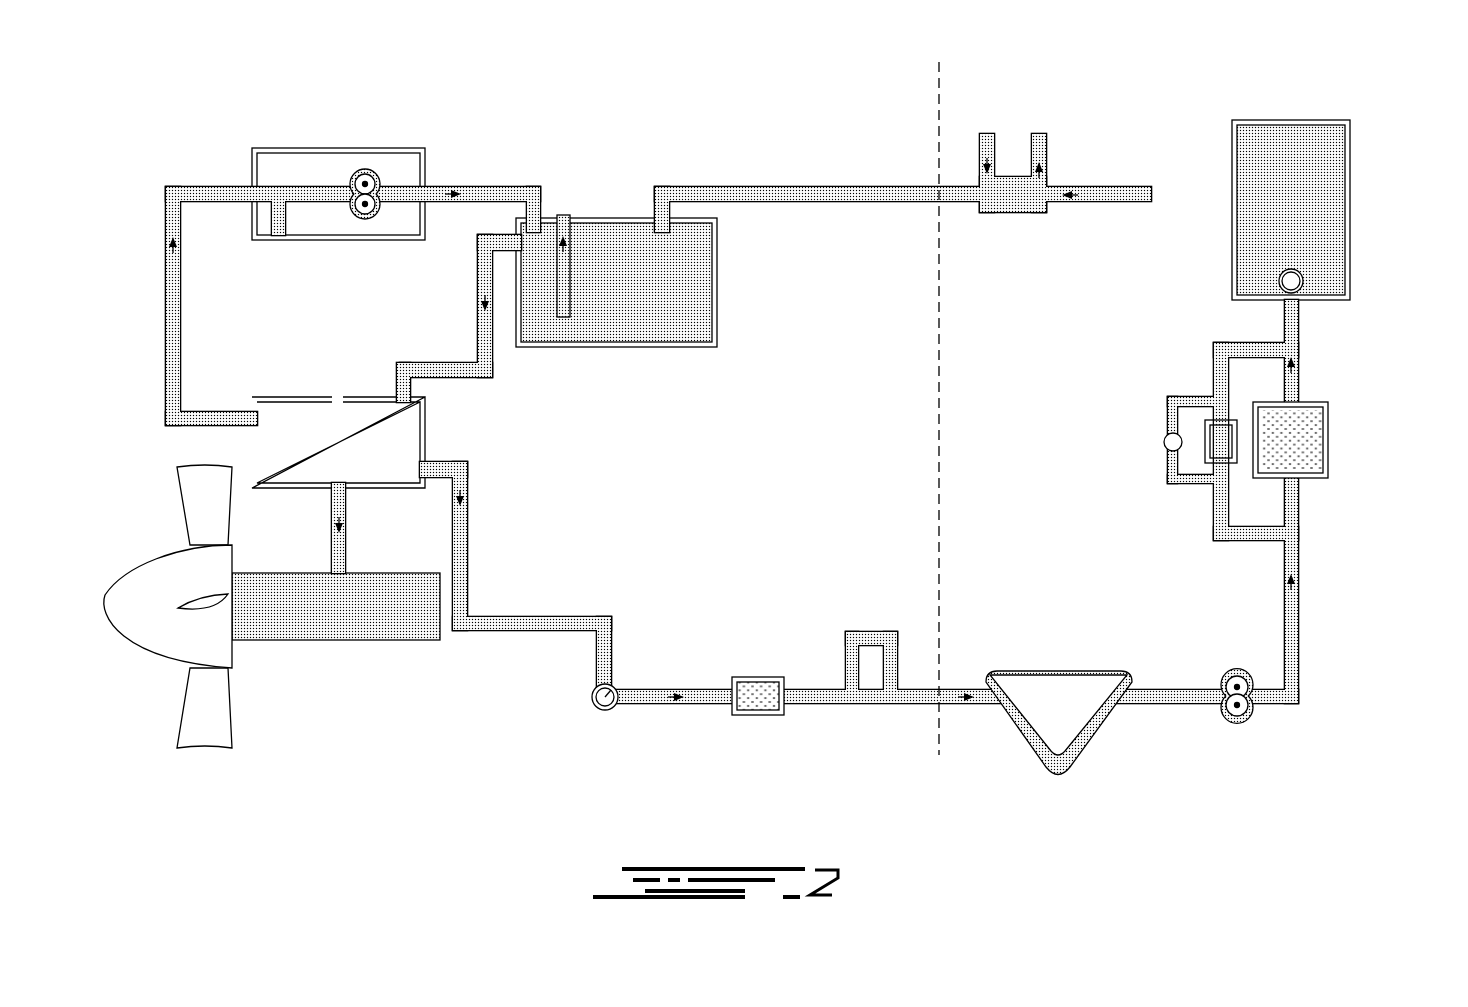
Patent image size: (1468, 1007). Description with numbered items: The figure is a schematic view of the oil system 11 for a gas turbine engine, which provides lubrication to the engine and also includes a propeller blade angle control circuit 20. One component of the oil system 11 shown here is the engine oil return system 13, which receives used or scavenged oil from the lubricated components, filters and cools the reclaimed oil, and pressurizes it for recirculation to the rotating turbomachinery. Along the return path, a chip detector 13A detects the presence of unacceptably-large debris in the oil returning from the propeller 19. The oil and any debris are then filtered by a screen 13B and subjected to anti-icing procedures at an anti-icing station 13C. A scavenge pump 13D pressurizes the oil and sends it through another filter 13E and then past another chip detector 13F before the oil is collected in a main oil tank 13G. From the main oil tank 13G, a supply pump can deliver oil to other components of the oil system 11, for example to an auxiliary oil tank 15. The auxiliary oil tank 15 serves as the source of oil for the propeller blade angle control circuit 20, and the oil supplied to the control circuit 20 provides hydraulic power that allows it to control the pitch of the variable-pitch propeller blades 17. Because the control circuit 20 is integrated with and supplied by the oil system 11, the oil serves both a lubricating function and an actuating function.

The oil system 11 is at (603, 120).
The engine oil return system 13 is at (910, 786).
The chip detector 13A is at (613, 683).
The screen 13B is at (758, 690).
The anti-icing station 13C is at (1052, 698).
The scavenge pump 13D is at (1255, 708).
The filter 13E is at (1250, 482).
The chip detector 13F is at (1275, 280).
The main oil tank 13G is at (1283, 122).
The auxiliary oil tank 15 is at (717, 288).
The propeller blades 17 is at (180, 493).
The propeller 19 is at (162, 624).
The propeller blade angle control circuit 20 is at (223, 260).